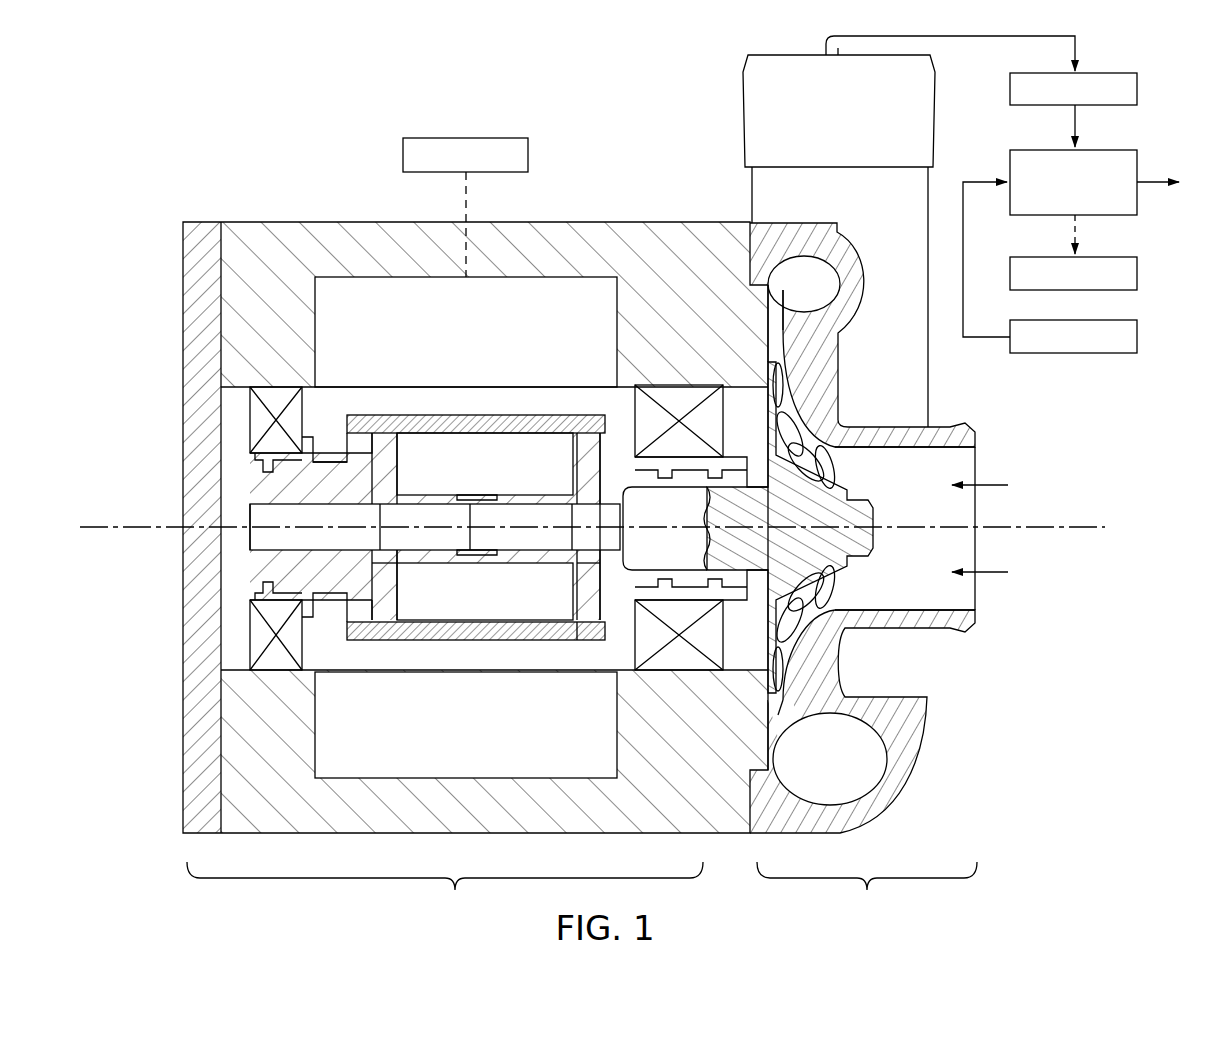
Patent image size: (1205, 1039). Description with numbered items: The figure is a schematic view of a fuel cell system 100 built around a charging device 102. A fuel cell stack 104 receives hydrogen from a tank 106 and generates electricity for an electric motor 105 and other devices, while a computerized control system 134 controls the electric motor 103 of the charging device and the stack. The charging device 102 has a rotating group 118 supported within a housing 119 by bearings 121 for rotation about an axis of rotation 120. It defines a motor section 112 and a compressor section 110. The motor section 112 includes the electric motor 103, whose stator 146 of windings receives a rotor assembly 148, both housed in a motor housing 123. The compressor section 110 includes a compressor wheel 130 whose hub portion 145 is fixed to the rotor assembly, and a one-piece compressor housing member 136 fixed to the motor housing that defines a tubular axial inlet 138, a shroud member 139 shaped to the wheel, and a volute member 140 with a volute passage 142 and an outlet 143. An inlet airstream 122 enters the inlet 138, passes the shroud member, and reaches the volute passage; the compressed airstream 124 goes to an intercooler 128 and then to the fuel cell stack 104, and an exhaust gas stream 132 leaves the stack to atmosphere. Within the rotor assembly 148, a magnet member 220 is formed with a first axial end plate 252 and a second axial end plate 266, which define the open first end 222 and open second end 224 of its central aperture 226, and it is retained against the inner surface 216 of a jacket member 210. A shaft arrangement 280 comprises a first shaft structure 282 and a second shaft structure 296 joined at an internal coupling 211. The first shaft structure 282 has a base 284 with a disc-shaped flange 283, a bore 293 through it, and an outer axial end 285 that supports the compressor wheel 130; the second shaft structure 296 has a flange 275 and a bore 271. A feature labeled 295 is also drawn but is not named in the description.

The fuel cell system 100 is at (148, 150).
The charging device 102 is at (735, 253).
The electric motor 103 is at (497, 400).
The fuel cell stack 104 is at (1040, 150).
The electric motor 105 is at (1055, 257).
The tank 106 is at (1078, 355).
The compressor section 110 is at (867, 894).
The motor section 112 is at (445, 894).
The rotating group 118 is at (262, 567).
The housing 119 is at (240, 751).
The axis of rotation 120 is at (1082, 531).
The bearings 121 is at (282, 661).
The inlet airstream 122 is at (993, 485).
The motor housing 123 is at (358, 243).
The compressed airstream 124 is at (832, 48).
The intercooler 128 is at (1047, 73).
The compressor wheel 130 is at (824, 505).
The exhaust gas stream 132 is at (1157, 178).
The control system 134 is at (466, 138).
The compressor housing member 136 is at (844, 695).
The axial inlet 138 is at (975, 627).
The shroud member 139 is at (823, 336).
The volute member 140 is at (840, 833).
The volute passage 142 is at (870, 780).
The outlet 143 is at (748, 63).
The hub portion 145 is at (757, 497).
The stator 146 is at (428, 283).
The rotor assembly 148 is at (416, 500).
The jacket member 210 is at (448, 634).
The internal coupling 211 is at (488, 492).
The inner surface 216 is at (517, 617).
The magnet member 220 is at (521, 431).
The open first end 222 is at (597, 576).
The open second end 224 is at (383, 568).
The central aperture 226 is at (497, 520).
The first axial end plate 252 is at (586, 616).
The second axial end plate 266 is at (386, 615).
The bore 271 is at (408, 540).
The flange 275 is at (347, 433).
The shaft arrangement 280 is at (630, 433).
The first shaft structure 282 is at (338, 616).
The flange 283 is at (580, 623).
The base 284 is at (265, 483).
The outer axial end 285 is at (740, 588).
The bore 293 is at (490, 533).
The air gap 295 is at (337, 441).
The second shaft structure 296 is at (690, 462).